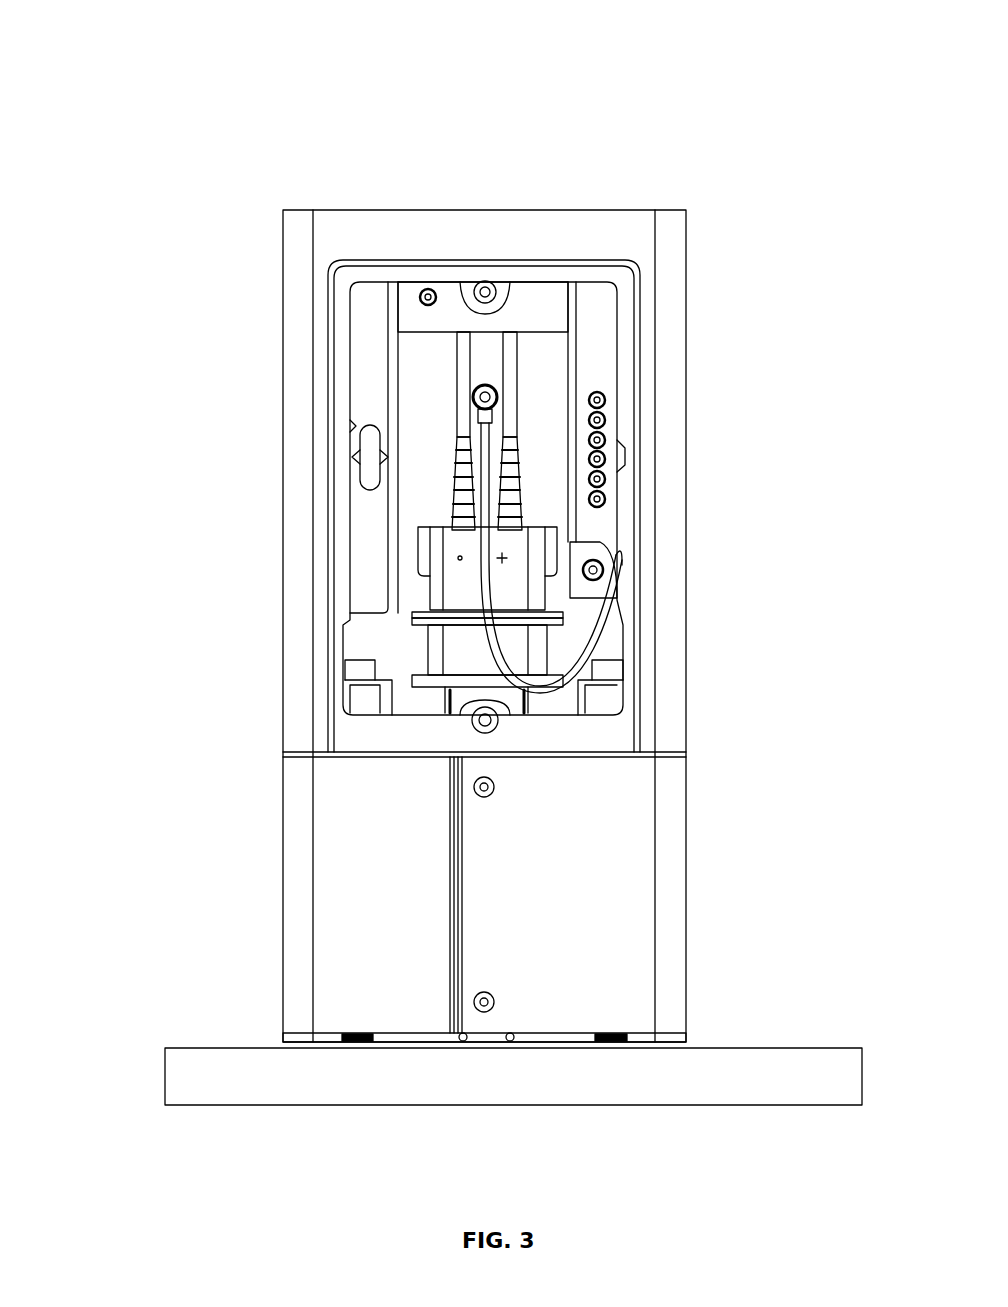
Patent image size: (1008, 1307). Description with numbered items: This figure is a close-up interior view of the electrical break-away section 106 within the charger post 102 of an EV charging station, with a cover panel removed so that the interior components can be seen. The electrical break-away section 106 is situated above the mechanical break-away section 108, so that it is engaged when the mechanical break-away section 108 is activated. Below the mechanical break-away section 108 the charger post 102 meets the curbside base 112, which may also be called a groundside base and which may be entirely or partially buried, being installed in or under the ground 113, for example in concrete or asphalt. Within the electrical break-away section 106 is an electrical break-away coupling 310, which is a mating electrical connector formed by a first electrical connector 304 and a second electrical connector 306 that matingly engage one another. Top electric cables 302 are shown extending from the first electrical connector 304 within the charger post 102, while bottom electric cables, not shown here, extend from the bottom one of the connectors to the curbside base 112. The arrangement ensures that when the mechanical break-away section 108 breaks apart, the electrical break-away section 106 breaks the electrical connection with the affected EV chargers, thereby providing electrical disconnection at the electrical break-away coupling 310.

The charger post 102 is at (190, 284).
The electrical break-away section 106 is at (170, 502).
The mechanical break-away section 108 is at (191, 874).
The curbside base 112 is at (283, 1045).
The ground 113 is at (165, 1077).
The top electric cables 302 is at (518, 420).
The first electrical connector 304 is at (428, 582).
The second electrical connector 306 is at (428, 654).
The electrical break-away coupling 310 is at (575, 611).